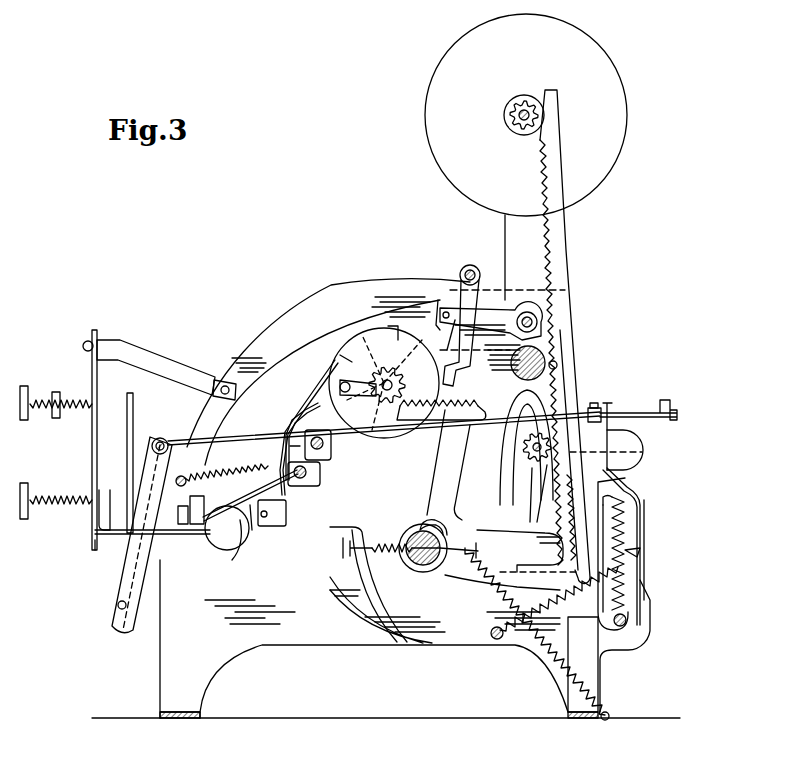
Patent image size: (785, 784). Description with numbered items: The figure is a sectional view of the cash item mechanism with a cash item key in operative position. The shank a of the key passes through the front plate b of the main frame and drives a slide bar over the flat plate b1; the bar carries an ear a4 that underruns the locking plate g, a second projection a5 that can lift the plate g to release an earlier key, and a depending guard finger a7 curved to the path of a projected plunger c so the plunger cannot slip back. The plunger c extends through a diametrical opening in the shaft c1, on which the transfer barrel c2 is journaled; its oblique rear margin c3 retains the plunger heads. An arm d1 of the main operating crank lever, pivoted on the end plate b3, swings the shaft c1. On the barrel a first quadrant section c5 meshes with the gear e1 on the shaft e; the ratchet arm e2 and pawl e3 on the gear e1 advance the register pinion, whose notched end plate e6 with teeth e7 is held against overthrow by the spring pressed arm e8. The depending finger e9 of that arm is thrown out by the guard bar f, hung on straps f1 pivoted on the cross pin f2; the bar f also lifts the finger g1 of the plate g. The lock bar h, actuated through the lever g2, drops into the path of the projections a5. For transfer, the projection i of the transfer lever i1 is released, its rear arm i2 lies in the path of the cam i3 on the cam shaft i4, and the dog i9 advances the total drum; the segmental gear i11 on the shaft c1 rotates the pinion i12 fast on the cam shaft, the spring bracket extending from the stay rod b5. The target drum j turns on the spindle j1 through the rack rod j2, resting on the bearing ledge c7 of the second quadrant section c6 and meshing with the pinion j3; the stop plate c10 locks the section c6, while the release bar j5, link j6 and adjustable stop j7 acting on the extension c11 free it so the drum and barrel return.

The target drum j is at (605, 183).
The spindle j1 is at (530, 113).
The rack rod j2 is at (565, 240).
The pinion j3 is at (505, 122).
The release bar j5 is at (150, 475).
The link j6 is at (190, 442).
The adjustable stop j7 is at (610, 407).
The projection i is at (456, 310).
The transfer lever i1 is at (497, 312).
The rear depending arm i2 is at (556, 365).
The cam i3 is at (535, 396).
The cam shaft i4 is at (530, 447).
The dog i9 is at (440, 365).
The segmental gear i11 is at (515, 533).
The pinion i12 is at (642, 452).
The front plate b is at (92, 380).
The flat plate b1 is at (95, 550).
The end plate b3 is at (305, 312).
The stay rod b5 is at (545, 348).
The shank a is at (55, 520).
The ear a4 is at (238, 562).
The second projection a5 is at (188, 522).
The guard finger a7 is at (397, 642).
The plunger c is at (450, 560).
The shaft c1 is at (420, 565).
The transfer barrel c2 is at (422, 520).
The rear margin c3 is at (448, 530).
The first quadrant section c5 is at (437, 467).
The second quadrant section c6 is at (624, 582).
The bearing ledge c7 is at (640, 553).
The stop plate c10 is at (645, 532).
The extension c11 is at (634, 432).
The shaft e is at (390, 395).
The gear e1 is at (405, 385).
The ratchet arm e2 is at (345, 384).
The pawl e3 is at (352, 330).
The notched end plate e6 is at (340, 355).
The teeth e7 is at (398, 340).
The spring pressed arm e8 is at (325, 380).
The depending finger e9 is at (292, 420).
The guard bar f is at (308, 475).
The strap f1 is at (290, 446).
The cross pin f2 is at (322, 452).
The locking plate g is at (220, 552).
The finger g1 is at (286, 495).
The lever g2 is at (228, 480).
The arm d1 is at (252, 530).
The lock bar h is at (178, 512).